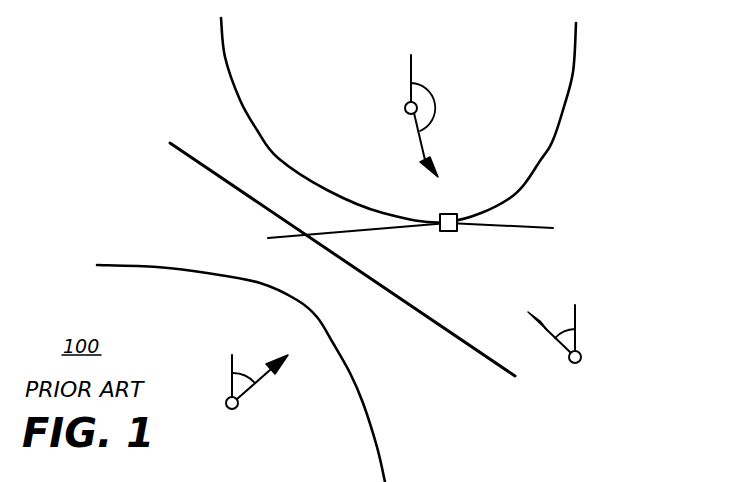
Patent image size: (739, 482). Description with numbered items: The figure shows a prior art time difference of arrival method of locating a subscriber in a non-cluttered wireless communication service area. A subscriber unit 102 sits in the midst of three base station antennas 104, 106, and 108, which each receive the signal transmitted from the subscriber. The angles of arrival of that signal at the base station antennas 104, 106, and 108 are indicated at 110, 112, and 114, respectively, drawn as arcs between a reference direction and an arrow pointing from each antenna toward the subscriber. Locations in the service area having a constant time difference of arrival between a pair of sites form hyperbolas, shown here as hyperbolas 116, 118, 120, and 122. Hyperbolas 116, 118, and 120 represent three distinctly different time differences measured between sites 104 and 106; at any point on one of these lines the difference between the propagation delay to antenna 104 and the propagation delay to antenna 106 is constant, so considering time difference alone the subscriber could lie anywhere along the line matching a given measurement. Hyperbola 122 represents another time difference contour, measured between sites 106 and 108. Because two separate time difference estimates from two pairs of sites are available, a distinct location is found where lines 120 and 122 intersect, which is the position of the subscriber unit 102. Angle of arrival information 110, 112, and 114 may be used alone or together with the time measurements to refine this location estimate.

The subscriber unit 102 is at (451, 232).
The base station antenna 104 is at (235, 409).
The base station antenna 106 is at (405, 109).
The base station antenna 108 is at (580, 362).
The angle of arrival 110 is at (243, 370).
The angle of arrival 112 is at (433, 99).
The angle of arrival 114 is at (563, 325).
The hyperbola 116 is at (342, 259).
The hyperbola 118 is at (118, 265).
The hyperbola 120 is at (225, 57).
The hyperbola 122 is at (574, 71).